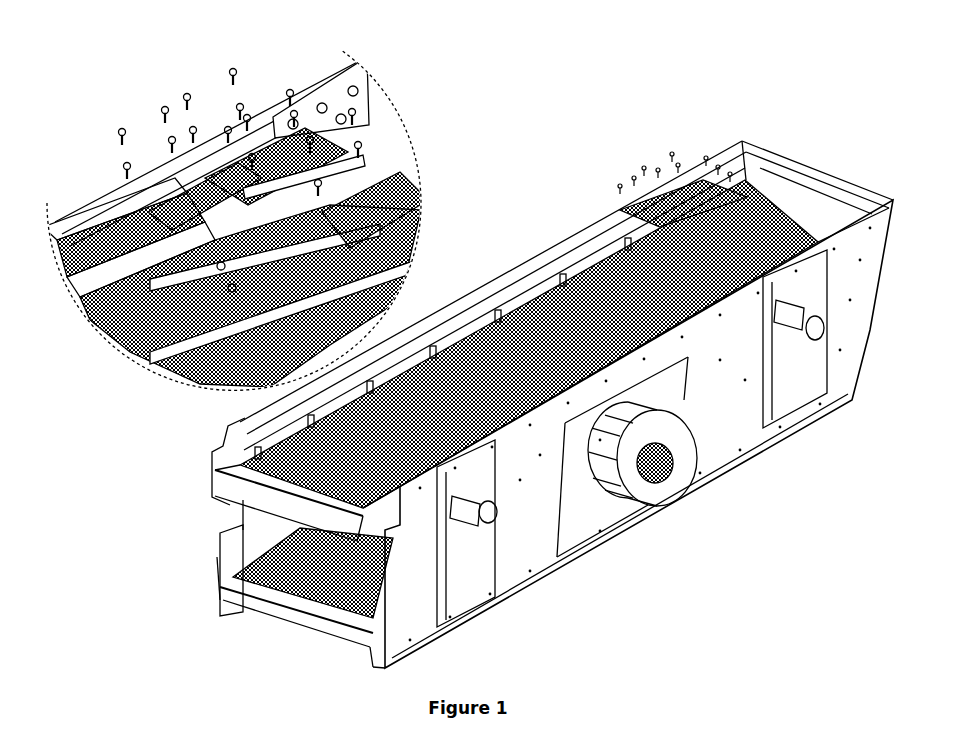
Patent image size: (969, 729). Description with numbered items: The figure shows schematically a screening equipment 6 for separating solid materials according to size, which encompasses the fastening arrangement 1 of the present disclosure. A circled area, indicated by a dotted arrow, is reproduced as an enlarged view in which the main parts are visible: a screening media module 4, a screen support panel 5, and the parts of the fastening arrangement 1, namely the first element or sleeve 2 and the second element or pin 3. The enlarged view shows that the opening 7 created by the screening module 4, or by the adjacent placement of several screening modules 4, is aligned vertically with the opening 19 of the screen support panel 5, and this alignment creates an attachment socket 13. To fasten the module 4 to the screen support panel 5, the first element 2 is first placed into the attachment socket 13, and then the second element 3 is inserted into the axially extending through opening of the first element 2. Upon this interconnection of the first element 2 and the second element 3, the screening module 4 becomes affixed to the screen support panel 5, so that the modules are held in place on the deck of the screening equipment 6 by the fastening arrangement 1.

The fastening arrangement 1 is at (387, 222).
The first element (sleeve) 2 is at (242, 103).
The second element (pin) 3 is at (236, 66).
The screening media module 4 is at (147, 213).
The screen support panel 5 is at (332, 277).
The screening equipment 6 is at (553, 214).
The opening 7 is at (363, 160).
The attachment socket 13 is at (220, 268).
The opening of the screen support panel 19 is at (333, 267).